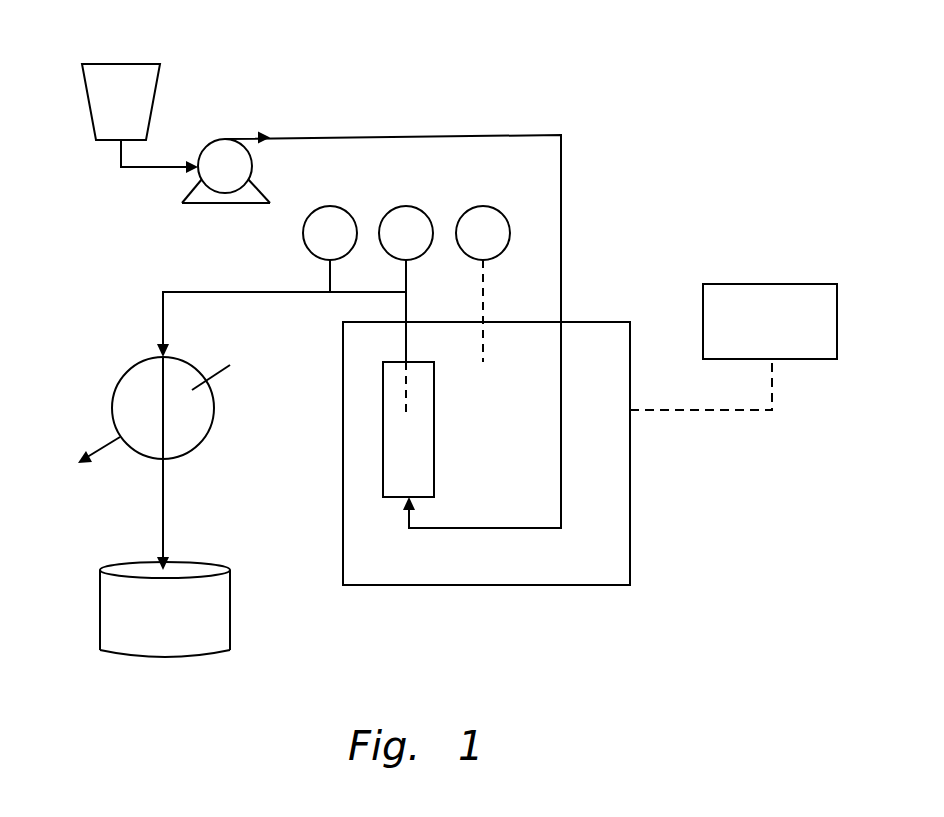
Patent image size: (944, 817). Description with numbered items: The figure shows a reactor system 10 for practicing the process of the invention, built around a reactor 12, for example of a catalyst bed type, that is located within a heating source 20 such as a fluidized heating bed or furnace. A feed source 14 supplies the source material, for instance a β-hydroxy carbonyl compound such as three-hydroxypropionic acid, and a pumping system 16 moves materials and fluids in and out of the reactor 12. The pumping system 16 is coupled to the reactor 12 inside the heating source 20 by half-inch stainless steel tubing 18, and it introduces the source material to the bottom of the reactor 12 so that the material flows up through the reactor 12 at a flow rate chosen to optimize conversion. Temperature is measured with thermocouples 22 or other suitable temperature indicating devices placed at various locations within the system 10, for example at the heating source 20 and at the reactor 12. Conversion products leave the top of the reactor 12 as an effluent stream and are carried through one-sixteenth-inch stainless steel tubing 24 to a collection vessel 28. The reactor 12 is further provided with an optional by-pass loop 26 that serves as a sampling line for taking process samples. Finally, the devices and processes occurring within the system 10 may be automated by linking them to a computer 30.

The reactor system 10 is at (745, 93).
The reactor 12 is at (394, 453).
The feed source 14 is at (135, 110).
The pumping system 16 is at (241, 179).
The stainless steel tubing 18 is at (561, 157).
The heating source 20 is at (361, 570).
The thermocouples 22 is at (315, 246).
The stainless steel tubing 24 is at (158, 313).
The by-pass loop 26 is at (118, 384).
The collection vessel 28 is at (181, 630).
The computer 30 is at (754, 335).